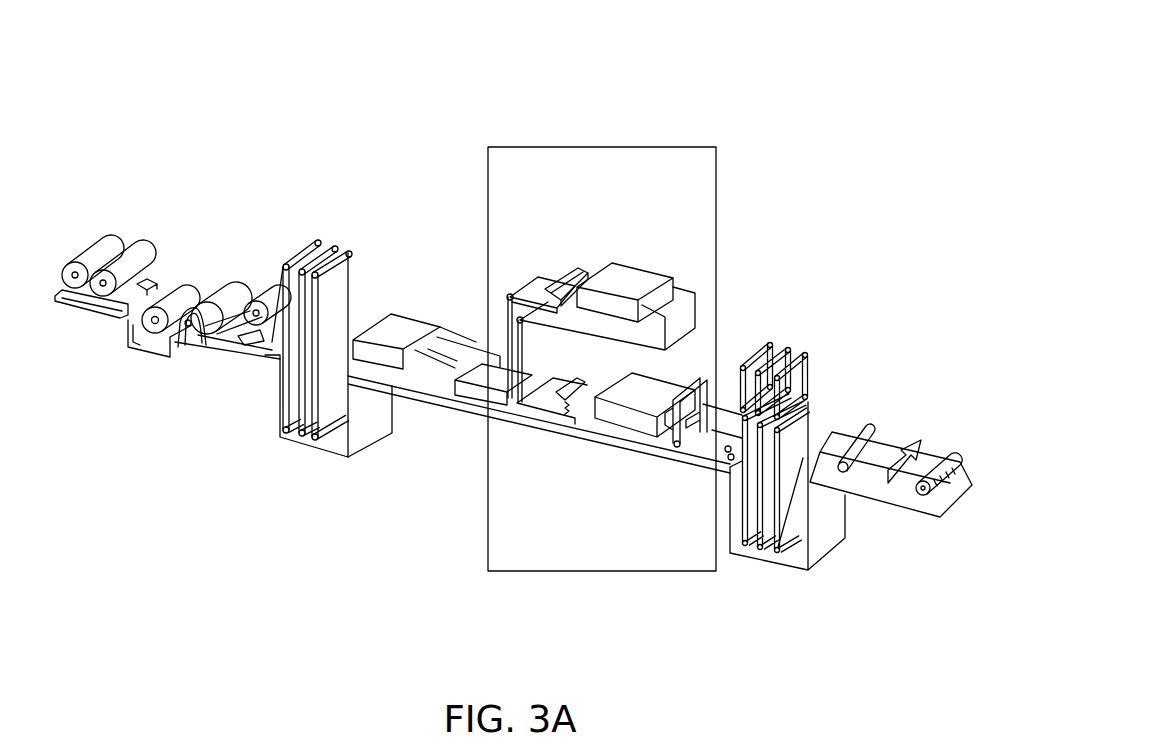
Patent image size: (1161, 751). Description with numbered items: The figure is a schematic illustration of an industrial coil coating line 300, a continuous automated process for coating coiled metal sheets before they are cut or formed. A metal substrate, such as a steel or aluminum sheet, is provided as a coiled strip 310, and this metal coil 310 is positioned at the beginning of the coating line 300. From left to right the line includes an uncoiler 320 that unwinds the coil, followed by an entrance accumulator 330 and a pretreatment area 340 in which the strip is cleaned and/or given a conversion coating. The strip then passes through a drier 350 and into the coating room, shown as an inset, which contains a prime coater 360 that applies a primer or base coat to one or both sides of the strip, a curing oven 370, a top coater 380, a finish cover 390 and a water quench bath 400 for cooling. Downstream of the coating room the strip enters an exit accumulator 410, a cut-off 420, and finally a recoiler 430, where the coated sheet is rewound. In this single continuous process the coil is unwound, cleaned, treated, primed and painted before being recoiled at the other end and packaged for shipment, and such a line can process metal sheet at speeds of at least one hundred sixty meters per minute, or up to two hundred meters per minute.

The coil coating line 300 is at (779, 90).
The coiled strip 310 is at (162, 334).
The uncoiler 320 is at (207, 341).
The entrance accumulator 330 is at (315, 248).
The pretreatment area 340 is at (396, 392).
The drier 350 is at (487, 322).
The prime coater 360 is at (541, 268).
The curing oven 370 is at (638, 268).
The top coater 380 is at (530, 424).
The finish cover 390 is at (607, 440).
The water quench bath 400 is at (677, 453).
The exit accumulator 410 is at (788, 345).
The cut-off 420 is at (887, 507).
The recoiler 430 is at (958, 470).